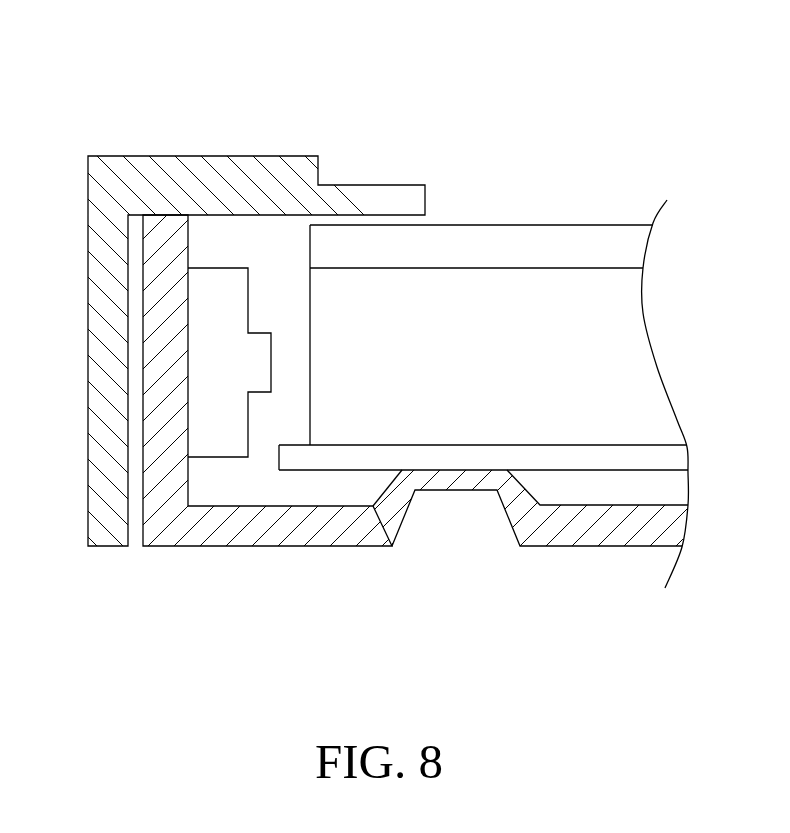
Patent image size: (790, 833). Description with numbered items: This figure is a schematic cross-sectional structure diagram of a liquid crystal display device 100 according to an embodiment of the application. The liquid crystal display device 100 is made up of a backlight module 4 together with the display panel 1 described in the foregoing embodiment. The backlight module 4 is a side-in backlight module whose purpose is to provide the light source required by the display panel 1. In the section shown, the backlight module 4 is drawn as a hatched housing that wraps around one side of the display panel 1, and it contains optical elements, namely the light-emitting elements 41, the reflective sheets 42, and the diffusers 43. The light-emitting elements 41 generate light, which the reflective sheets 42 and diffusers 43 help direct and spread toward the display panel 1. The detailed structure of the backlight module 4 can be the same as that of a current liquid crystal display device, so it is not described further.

The liquid crystal display device 100 is at (118, 58).
The backlight module 4 is at (148, 155).
The display panel 1 is at (518, 220).
The light-emitting element 41 is at (264, 396).
The reflective sheet 42 is at (453, 447).
The diffuser 43 is at (310, 357).